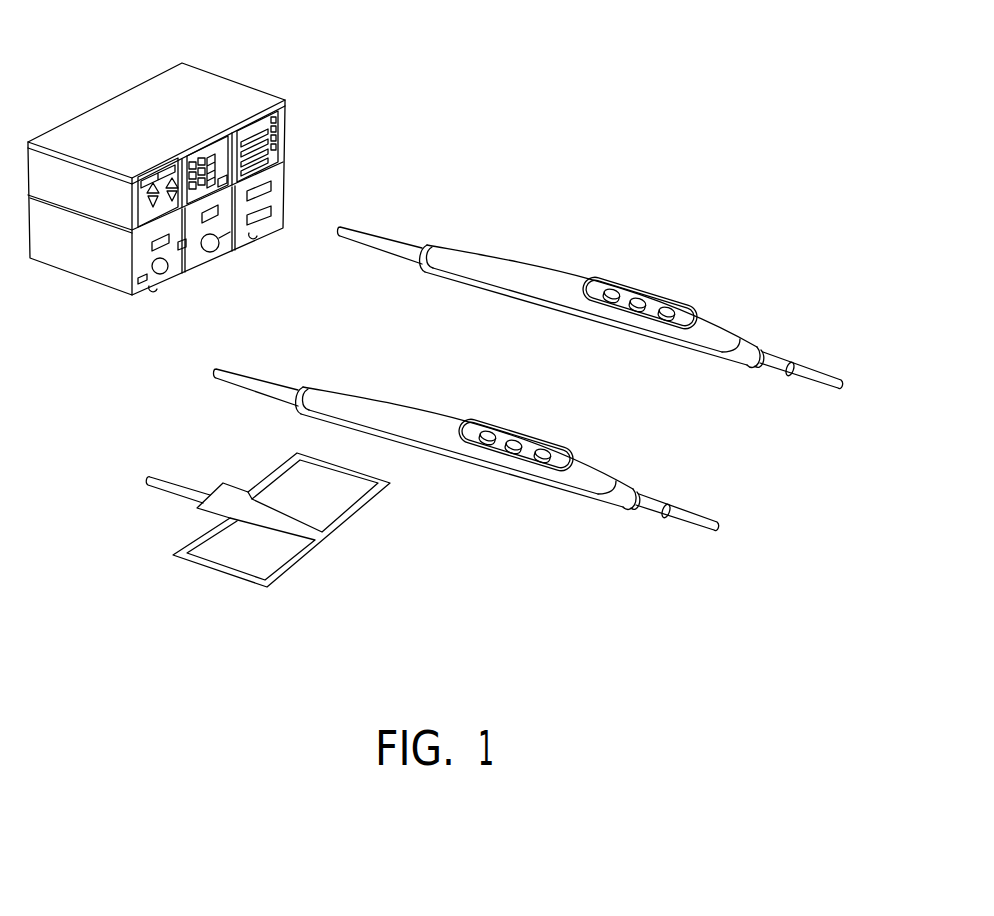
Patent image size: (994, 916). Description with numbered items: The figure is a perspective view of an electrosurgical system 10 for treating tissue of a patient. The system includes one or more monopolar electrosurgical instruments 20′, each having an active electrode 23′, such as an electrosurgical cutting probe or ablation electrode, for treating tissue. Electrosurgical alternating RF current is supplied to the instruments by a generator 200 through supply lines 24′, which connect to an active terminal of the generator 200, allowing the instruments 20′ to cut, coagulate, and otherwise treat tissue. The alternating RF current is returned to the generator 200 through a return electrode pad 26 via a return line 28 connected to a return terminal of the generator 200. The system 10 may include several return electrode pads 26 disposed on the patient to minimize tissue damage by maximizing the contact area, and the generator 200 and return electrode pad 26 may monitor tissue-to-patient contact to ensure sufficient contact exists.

The electrosurgical system 10 is at (576, 156).
The generator 200 is at (126, 78).
The monopolar electrosurgical instrument 20′ is at (727, 318).
The active electrode 23′ is at (810, 367).
The supply line 24′ is at (378, 236).
The return electrode pad 26 is at (223, 580).
The return line 28 is at (178, 482).